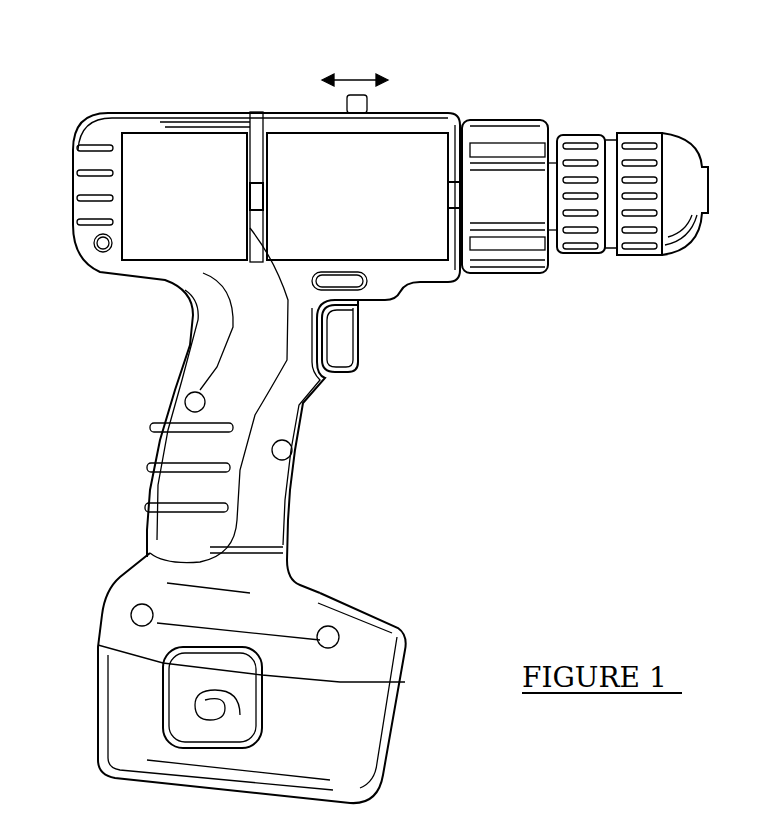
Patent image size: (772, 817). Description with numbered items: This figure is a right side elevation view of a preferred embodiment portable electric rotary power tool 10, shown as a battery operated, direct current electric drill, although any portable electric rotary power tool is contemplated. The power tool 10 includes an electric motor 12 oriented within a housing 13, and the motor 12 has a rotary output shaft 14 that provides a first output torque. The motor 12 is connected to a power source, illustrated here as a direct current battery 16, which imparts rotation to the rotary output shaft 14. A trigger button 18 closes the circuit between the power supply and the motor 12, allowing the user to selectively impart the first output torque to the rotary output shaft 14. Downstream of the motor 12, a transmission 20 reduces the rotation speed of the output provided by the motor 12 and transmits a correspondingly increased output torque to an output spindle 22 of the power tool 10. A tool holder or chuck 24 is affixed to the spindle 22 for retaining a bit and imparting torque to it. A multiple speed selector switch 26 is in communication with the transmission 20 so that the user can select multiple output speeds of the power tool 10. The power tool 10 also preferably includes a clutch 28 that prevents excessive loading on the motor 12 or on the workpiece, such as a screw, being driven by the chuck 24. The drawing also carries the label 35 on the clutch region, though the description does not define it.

The power tool 10 is at (373, 44).
The electric motor 12 is at (188, 133).
The housing 13 is at (90, 125).
The rotary output shaft 14 is at (258, 112).
The direct current battery 16 is at (405, 723).
The trigger button 18 is at (358, 342).
The transmission 20 is at (388, 133).
The output spindle 22 is at (557, 150).
The chuck 24 is at (642, 133).
The multiple speed selector switch 26 is at (343, 100).
The clutch 28 is at (503, 119).
The clutch collar 35 is at (473, 125).